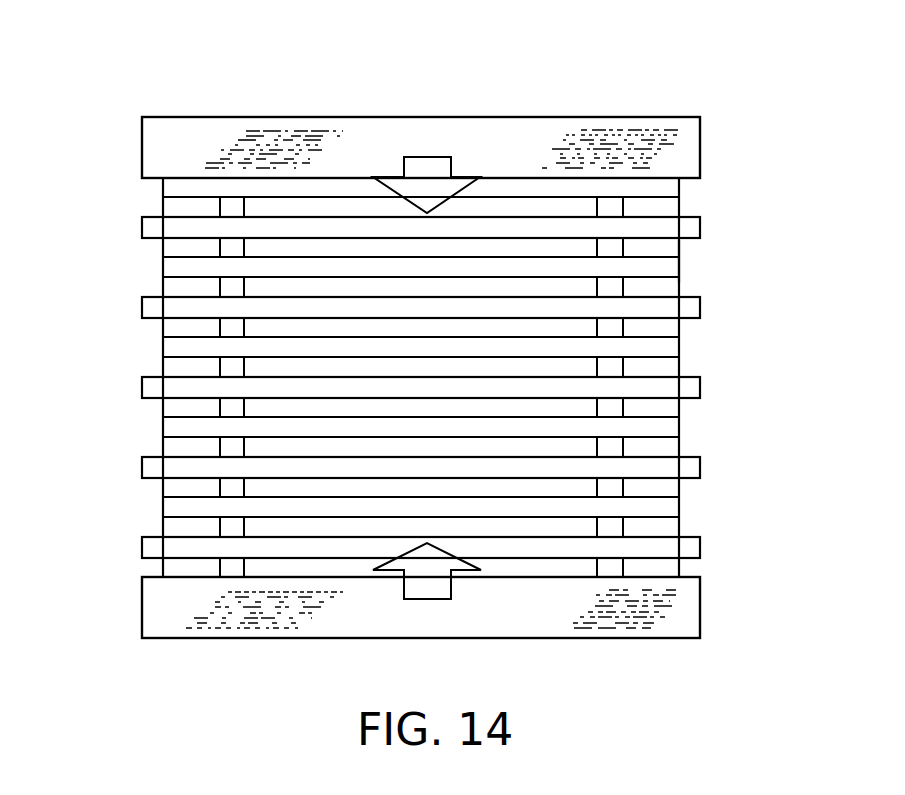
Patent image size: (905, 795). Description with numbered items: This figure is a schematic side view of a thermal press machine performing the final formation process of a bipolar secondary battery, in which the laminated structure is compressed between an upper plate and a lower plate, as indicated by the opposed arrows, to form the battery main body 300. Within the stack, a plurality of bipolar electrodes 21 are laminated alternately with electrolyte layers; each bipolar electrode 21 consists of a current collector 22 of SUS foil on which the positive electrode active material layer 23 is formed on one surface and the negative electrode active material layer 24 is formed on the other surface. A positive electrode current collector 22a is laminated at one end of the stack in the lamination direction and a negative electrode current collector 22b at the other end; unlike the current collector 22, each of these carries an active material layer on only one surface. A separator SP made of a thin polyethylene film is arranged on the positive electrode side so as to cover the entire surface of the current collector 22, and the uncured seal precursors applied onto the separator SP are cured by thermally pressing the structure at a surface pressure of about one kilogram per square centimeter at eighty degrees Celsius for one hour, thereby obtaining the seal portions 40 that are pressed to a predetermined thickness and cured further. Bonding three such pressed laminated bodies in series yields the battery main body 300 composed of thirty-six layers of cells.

The battery main body 300 is at (146, 278).
The positive electrode current collector 22a is at (333, 189).
The negative electrode current collector 22b is at (331, 565).
The separator SP is at (689, 223).
The bipolar electrode 21 is at (617, 65).
The current collector 22 is at (530, 280).
The positive electrode active material layer 23 is at (573, 268).
The negative electrode active material layer 24 is at (492, 245).
The seal portion 40 is at (672, 240).